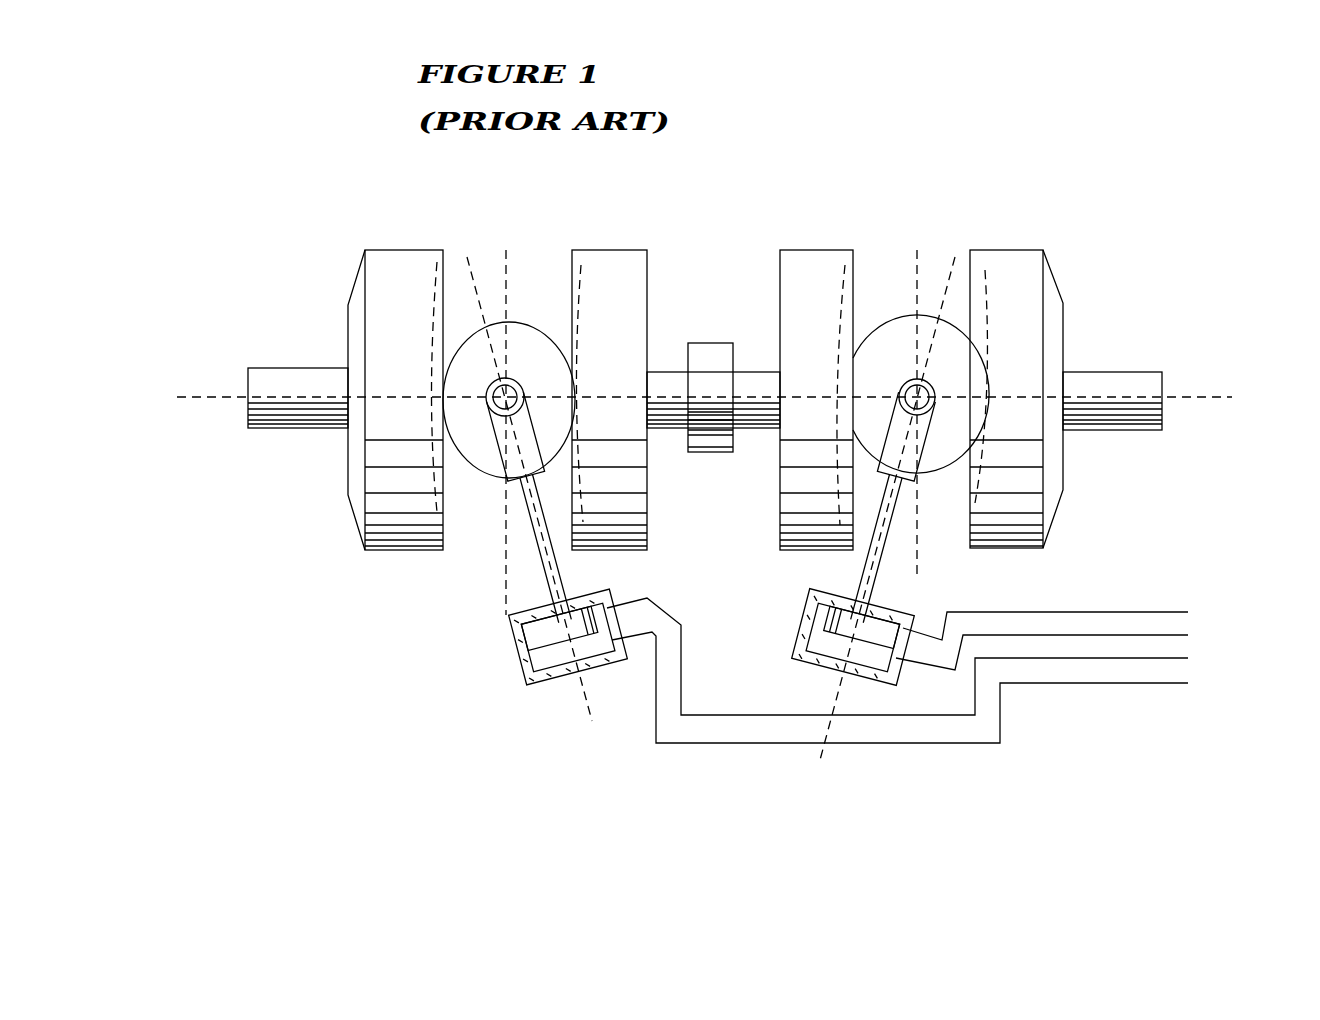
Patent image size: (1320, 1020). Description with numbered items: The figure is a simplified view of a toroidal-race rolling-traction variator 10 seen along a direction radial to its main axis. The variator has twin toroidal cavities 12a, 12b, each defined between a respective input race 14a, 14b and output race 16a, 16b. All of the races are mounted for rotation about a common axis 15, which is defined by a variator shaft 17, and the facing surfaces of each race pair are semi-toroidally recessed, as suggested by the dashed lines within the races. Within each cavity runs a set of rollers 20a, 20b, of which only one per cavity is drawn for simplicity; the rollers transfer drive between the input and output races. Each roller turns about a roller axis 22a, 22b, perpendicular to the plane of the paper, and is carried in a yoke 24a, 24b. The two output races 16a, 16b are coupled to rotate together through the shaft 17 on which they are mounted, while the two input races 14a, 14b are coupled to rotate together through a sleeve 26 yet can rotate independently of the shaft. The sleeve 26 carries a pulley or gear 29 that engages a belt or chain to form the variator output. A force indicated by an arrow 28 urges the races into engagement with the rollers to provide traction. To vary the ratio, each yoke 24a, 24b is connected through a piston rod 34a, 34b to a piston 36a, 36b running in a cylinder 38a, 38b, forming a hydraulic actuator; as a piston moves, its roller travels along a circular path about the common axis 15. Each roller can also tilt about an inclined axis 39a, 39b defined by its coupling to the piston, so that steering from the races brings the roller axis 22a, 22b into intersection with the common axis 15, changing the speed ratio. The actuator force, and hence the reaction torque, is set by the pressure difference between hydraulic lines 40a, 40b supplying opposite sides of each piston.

The variator 10 is at (741, 184).
The toroidal cavity 12a is at (522, 284).
The toroidal cavity 12b is at (927, 284).
The input race 14a is at (409, 250).
The input race 14b is at (1002, 248).
The common axis 15 is at (687, 404).
The output race 16a is at (610, 250).
The output race 16b is at (827, 250).
The variator shaft 17 is at (285, 430).
The roller 20a is at (493, 478).
The roller 20b is at (943, 325).
The roller axis 22a is at (518, 384).
The roller axis 22b is at (928, 393).
The yoke 24a is at (507, 484).
The yoke 24b is at (945, 465).
The sleeve 26 is at (668, 372).
The arrow 28 is at (1080, 353).
The pulley or gear 29 is at (713, 343).
The piston rod 34a is at (560, 571).
The piston rod 34b is at (887, 535).
The piston 36a is at (518, 660).
The piston 36b is at (822, 642).
The cylinder 38a is at (520, 662).
The cylinder 38b is at (810, 670).
The inclined axis 39a is at (548, 502).
The inclined axis 39b is at (877, 522).
The hydraulic line 40a is at (926, 670).
The hydraulic line 40b is at (1071, 641).